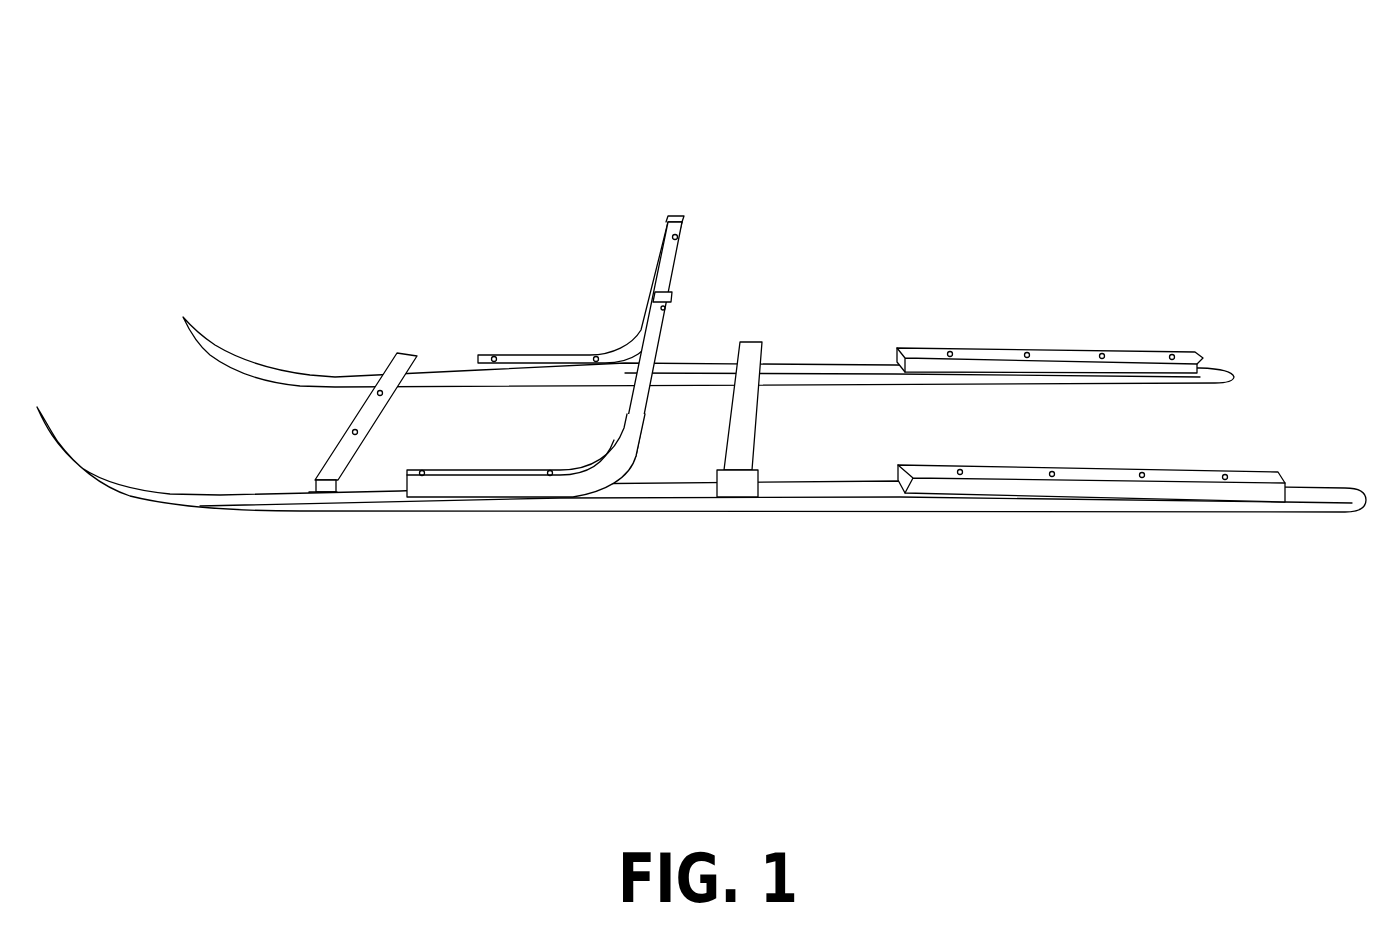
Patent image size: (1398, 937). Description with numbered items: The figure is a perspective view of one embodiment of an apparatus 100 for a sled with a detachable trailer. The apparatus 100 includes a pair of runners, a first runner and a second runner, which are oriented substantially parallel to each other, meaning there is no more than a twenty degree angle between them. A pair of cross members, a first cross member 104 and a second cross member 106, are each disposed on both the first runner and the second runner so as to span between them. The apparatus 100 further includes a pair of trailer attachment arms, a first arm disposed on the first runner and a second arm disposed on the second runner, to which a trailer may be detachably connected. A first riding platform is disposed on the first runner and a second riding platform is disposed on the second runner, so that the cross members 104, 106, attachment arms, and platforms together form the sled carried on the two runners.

The apparatus 100 is at (133, 115).
The first cross member 104 is at (344, 453).
The second cross member 106 is at (747, 410).